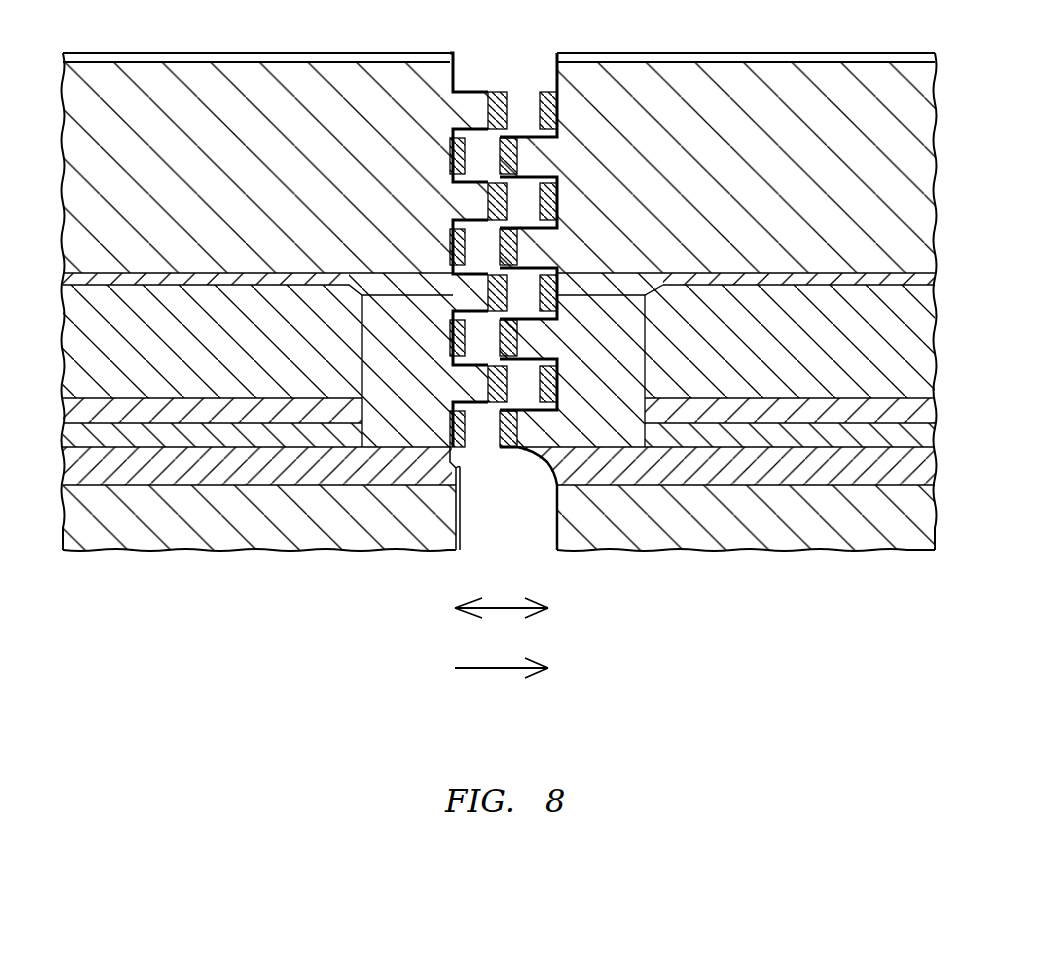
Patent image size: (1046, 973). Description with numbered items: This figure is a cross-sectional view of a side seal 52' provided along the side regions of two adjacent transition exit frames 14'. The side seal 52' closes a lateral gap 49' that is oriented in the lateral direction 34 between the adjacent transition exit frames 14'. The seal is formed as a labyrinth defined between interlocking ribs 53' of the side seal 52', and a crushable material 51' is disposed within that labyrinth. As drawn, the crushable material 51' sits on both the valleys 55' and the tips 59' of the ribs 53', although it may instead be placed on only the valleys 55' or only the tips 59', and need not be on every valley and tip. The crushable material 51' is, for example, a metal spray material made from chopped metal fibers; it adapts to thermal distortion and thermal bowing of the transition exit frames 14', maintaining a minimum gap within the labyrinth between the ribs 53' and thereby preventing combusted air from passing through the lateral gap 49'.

The transition exit frame 14' is at (499, 279).
The side seal 52' is at (520, 223).
The crushable material 51' is at (509, 108).
The ribs 53' is at (561, 380).
The tips 59' is at (447, 379).
The valleys 55' is at (426, 426).
The lateral gap 49' is at (490, 626).
The lateral direction 34 is at (502, 670).